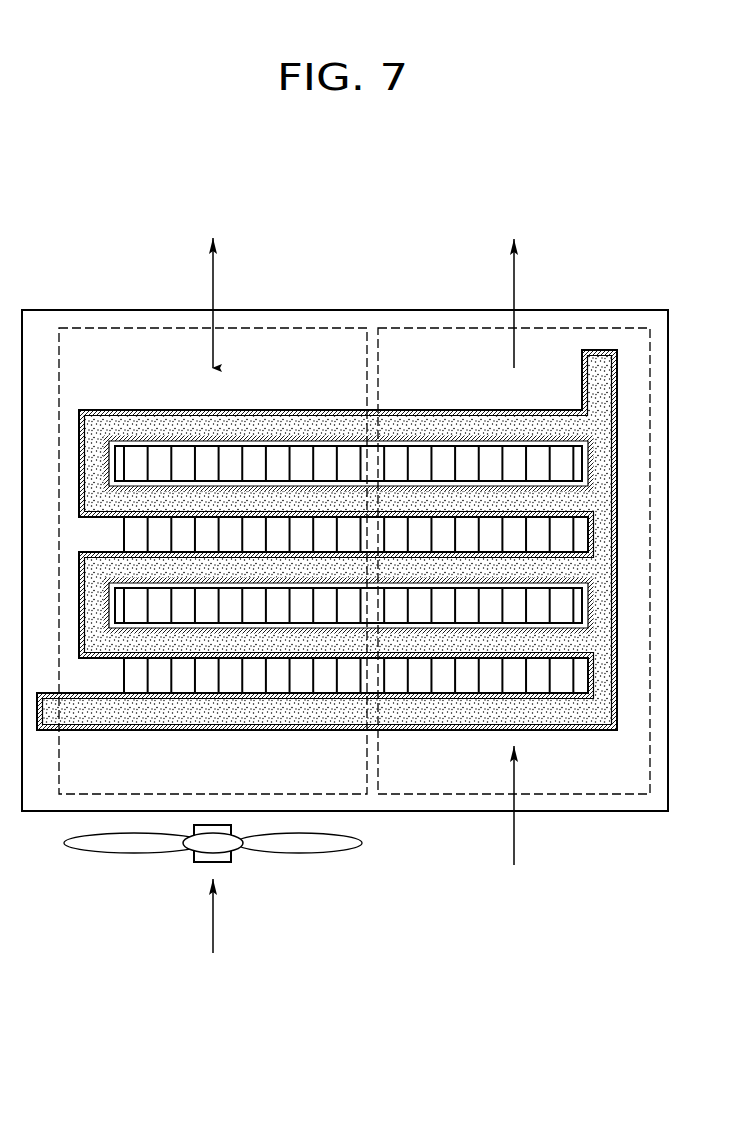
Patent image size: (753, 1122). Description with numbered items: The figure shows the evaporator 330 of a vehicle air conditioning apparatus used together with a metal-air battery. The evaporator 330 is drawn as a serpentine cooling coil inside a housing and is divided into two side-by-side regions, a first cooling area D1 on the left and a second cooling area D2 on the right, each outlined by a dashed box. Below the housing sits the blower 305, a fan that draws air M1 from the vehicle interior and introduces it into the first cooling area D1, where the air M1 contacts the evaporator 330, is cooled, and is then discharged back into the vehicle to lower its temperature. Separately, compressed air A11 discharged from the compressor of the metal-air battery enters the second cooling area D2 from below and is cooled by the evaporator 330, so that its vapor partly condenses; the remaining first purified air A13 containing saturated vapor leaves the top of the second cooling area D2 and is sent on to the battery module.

The evaporator 330 is at (615, 310).
The blower 305 is at (300, 850).
The air M1 is at (211, 596).
The first purified air A13 is at (514, 287).
The compressed air A11 is at (513, 822).
The first cooling area D1 is at (310, 328).
The second cooling area D2 is at (437, 328).